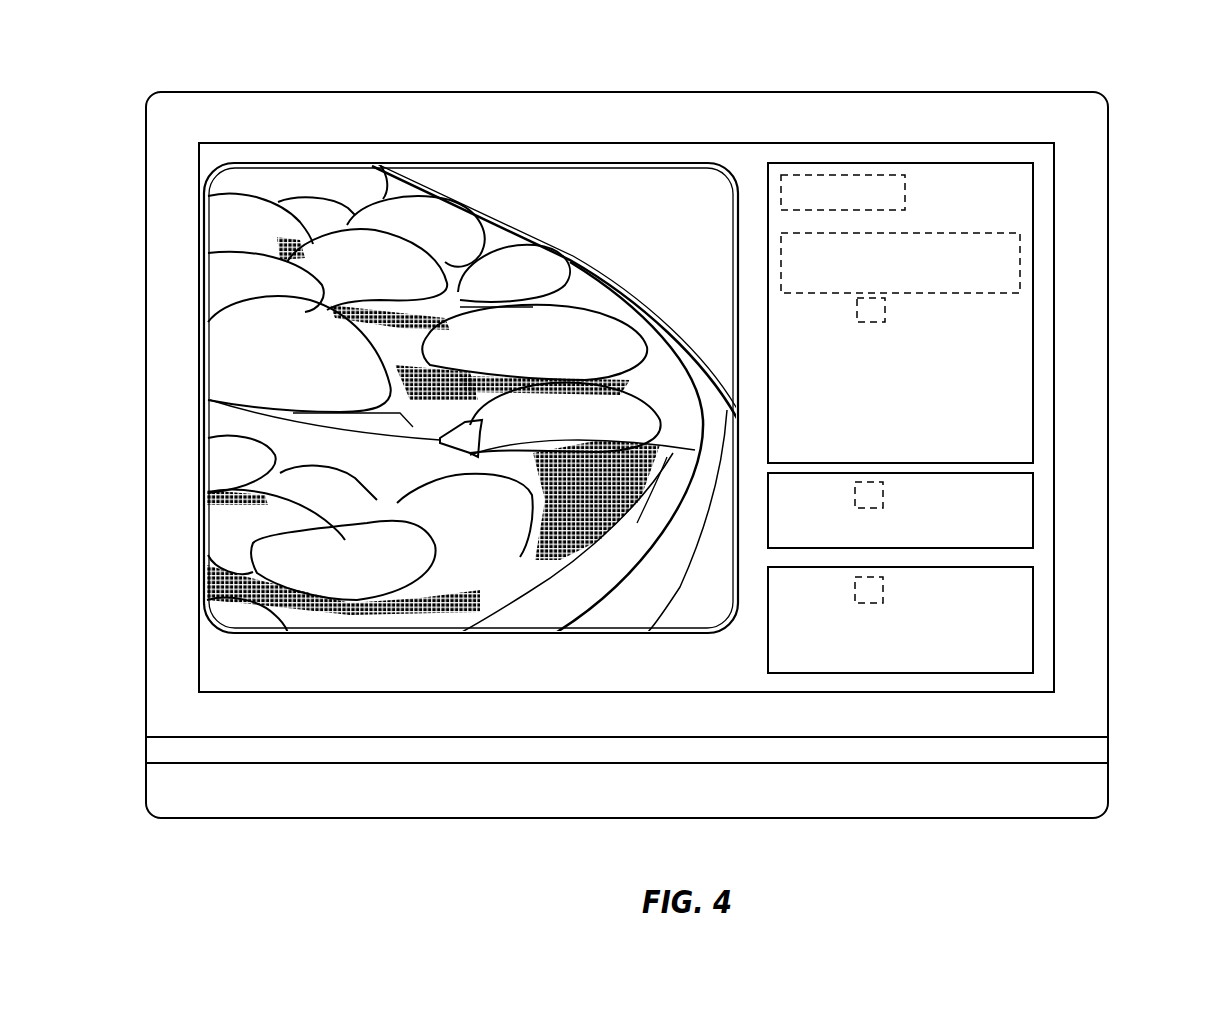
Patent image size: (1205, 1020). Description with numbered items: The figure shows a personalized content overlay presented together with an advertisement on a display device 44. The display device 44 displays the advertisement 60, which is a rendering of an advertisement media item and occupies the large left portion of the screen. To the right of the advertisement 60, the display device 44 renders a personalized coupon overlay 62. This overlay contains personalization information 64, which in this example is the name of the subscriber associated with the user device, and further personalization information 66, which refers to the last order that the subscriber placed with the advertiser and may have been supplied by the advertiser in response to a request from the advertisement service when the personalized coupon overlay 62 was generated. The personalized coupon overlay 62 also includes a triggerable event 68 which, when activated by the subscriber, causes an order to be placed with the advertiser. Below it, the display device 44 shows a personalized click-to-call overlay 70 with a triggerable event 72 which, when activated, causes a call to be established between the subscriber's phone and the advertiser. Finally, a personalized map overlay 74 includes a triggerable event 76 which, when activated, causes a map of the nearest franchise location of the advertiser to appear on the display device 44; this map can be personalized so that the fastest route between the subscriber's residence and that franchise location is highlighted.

The display device 44 is at (983, 92).
The advertisement 60 is at (623, 163).
The personalized coupon overlay 62 is at (1033, 208).
The personalization information 64 is at (860, 177).
The personalization information 66 is at (1033, 268).
The triggerable event 68 is at (872, 317).
The personalized click-to-call overlay 70 is at (1033, 508).
The triggerable event 72 is at (880, 508).
The personalized map overlay 74 is at (1033, 603).
The triggerable event 76 is at (880, 603).